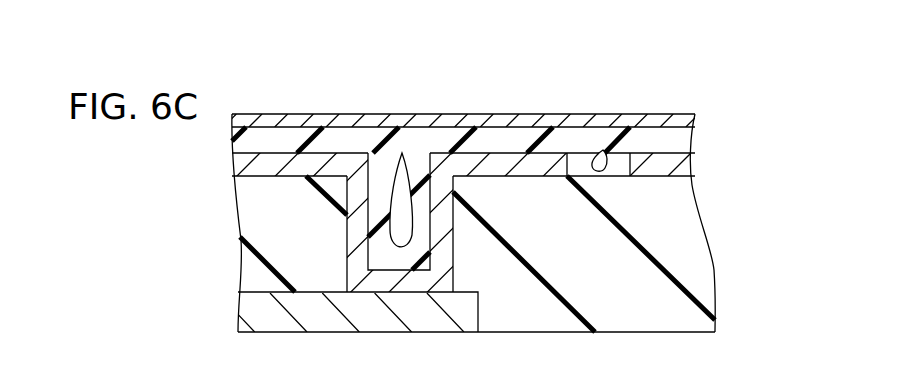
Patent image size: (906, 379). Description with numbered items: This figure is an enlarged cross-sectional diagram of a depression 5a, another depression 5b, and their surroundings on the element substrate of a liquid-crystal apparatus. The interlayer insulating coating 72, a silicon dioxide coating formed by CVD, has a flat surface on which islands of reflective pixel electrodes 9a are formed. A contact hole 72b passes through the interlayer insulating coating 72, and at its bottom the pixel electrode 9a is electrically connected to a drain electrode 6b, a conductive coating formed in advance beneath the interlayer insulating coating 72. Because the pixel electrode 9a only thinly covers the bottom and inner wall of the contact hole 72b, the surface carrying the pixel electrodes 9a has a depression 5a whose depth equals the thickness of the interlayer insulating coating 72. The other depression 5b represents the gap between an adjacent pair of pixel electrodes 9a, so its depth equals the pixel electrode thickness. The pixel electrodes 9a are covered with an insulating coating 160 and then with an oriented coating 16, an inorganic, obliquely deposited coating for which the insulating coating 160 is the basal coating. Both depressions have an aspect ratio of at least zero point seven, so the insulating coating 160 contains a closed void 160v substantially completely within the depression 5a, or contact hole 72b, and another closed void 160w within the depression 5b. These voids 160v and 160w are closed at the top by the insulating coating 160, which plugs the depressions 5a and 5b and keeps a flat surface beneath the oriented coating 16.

The oriented coating 16 is at (664, 119).
The insulating coating 160 is at (687, 142).
The pixel electrode 9a is at (267, 160).
The contact hole 72b is at (347, 200).
The void 160v is at (412, 184).
The depression 5b is at (572, 170).
The void 160w is at (601, 150).
The interlayer insulating coating 72 is at (705, 254).
The depression 5a is at (418, 252).
The drain electrode 6b is at (468, 312).